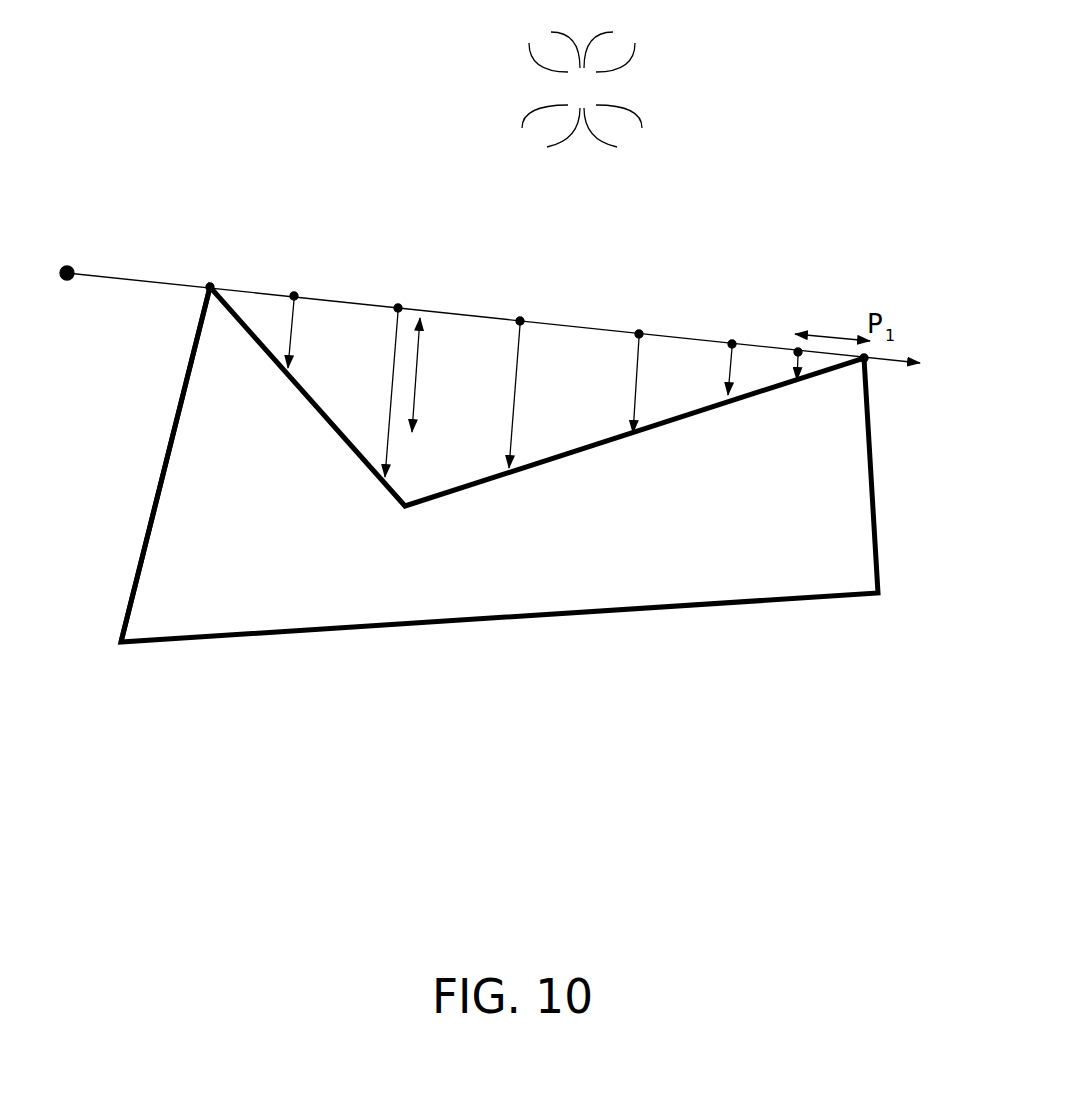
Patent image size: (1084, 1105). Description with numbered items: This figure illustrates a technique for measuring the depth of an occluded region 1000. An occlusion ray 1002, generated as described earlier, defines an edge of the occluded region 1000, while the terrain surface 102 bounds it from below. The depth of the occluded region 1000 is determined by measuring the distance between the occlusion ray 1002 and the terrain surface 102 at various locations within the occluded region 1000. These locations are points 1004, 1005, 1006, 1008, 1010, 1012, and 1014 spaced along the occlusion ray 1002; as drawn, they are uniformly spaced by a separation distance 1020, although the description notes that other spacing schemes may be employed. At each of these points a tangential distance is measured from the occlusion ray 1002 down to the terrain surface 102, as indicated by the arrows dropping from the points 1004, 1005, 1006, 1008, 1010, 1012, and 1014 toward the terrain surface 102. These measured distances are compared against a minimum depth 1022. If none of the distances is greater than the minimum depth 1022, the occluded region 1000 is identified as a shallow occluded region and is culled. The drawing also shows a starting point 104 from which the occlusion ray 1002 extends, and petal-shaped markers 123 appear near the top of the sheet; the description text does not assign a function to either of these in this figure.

The start point 104 is at (74, 266).
The point 1004 is at (206, 285).
The terrain surface 102 is at (185, 375).
The occluded region 1000 is at (325, 380).
The occlusion ray 1002 is at (244, 288).
The point 1005 is at (294, 292).
The point 1006 is at (395, 306).
The minimum depth 1022 is at (421, 365).
The point 1008 is at (516, 320).
The point 1010 is at (635, 333).
The point 1012 is at (728, 343).
The point 1014 is at (794, 351).
The separation distance 1020 is at (827, 328).
The petal-shaped markers 123 is at (584, 91).